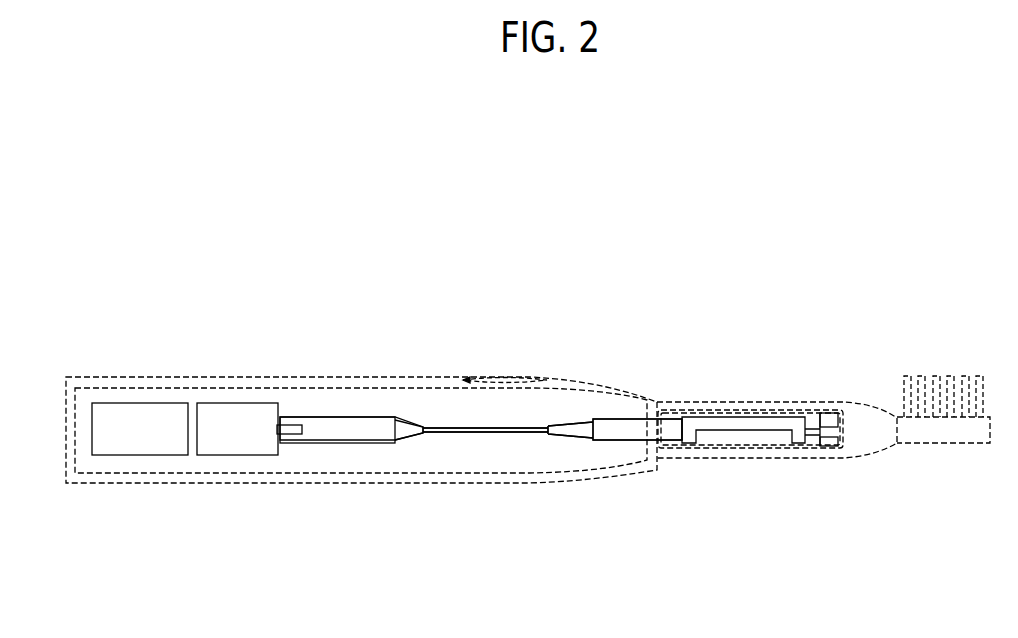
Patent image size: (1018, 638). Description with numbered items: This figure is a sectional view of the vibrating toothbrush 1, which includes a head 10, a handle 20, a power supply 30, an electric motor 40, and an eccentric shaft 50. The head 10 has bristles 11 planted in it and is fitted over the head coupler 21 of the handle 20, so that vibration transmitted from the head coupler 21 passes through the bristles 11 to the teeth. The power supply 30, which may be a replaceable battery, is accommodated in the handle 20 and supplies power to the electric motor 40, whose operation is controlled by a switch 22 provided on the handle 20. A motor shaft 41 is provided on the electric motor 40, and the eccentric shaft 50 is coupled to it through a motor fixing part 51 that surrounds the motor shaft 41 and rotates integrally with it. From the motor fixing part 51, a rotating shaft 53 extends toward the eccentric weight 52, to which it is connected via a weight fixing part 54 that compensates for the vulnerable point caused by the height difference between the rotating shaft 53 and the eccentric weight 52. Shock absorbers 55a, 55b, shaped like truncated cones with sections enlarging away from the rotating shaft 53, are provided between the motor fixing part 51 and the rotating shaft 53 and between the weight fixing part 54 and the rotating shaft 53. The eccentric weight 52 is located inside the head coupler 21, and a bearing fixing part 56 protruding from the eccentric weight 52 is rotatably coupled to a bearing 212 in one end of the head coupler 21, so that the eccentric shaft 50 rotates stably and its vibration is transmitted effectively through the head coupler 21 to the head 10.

The vibrating toothbrush 1 is at (834, 248).
The head 10 is at (852, 402).
The bristles 11 is at (908, 376).
The handle 20 is at (608, 479).
The head coupler 21 is at (783, 450).
The bearing 212 is at (830, 446).
The switch 22 is at (503, 374).
The power supply 30 is at (137, 410).
The electric motor 40 is at (244, 410).
The motor shaft 41 is at (290, 436).
The eccentric shaft 50 is at (363, 443).
The motor fixing part 51 is at (333, 427).
The eccentric weight 52 is at (688, 437).
The rotating shaft 53 is at (478, 433).
The weight fixing part 54 is at (623, 430).
The shock absorber 55a is at (408, 437).
The shock absorber 55b is at (573, 430).
The bearing fixing part 56 is at (812, 440).